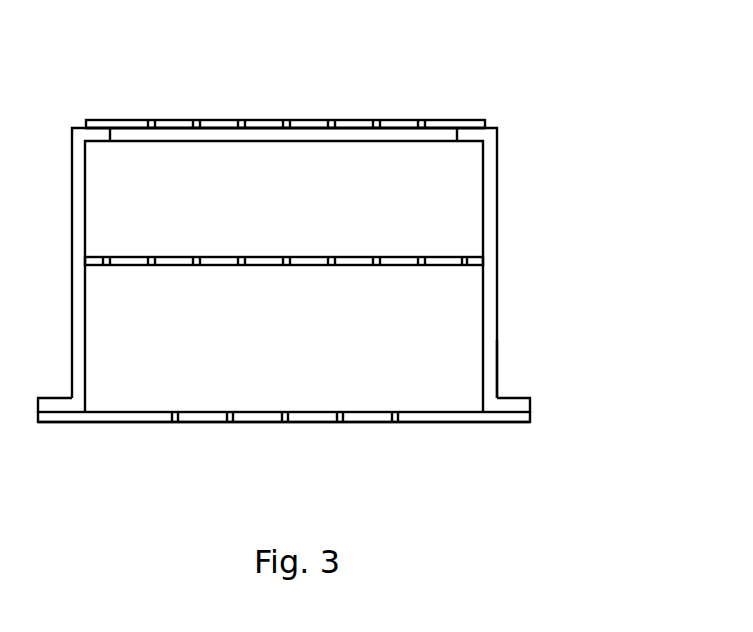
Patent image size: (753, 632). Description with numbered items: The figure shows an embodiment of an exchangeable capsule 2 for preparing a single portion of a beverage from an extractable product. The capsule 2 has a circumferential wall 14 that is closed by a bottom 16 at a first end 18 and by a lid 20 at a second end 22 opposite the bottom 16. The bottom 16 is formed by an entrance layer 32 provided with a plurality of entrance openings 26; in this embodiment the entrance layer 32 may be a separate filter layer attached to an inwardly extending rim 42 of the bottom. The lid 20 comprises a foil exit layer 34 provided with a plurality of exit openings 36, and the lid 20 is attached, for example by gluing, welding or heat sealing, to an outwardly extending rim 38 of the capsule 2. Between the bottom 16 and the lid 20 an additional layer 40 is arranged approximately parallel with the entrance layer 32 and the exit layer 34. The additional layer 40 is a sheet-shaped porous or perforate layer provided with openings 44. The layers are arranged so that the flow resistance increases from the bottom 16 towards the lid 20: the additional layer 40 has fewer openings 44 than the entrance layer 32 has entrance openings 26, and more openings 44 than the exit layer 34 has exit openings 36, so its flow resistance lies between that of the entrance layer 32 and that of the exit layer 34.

The exchangeable capsule 2 is at (550, 438).
The circumferential wall 14 is at (488, 293).
The bottom 16 is at (448, 120).
The first end 18 is at (488, 173).
The lid 20 is at (344, 442).
The second end 22 is at (490, 390).
The entrance openings 26 is at (150, 120).
The entrance layer 32 is at (393, 127).
The exit layer 34 is at (435, 423).
The exit openings 36 is at (280, 424).
The outwardly extending rim 38 is at (523, 407).
The additional layer 40 is at (480, 261).
The inwardly extending rim 42 is at (472, 135).
The openings 44 is at (430, 255).